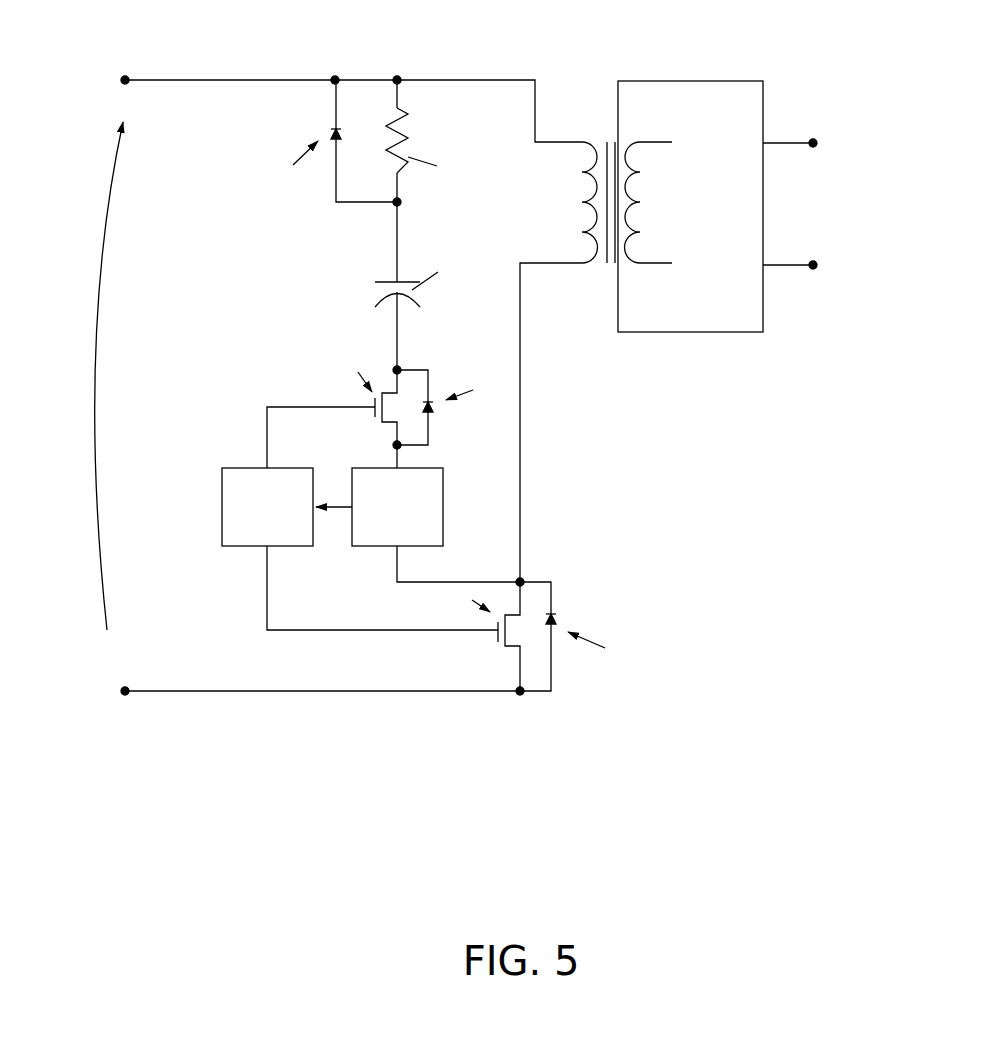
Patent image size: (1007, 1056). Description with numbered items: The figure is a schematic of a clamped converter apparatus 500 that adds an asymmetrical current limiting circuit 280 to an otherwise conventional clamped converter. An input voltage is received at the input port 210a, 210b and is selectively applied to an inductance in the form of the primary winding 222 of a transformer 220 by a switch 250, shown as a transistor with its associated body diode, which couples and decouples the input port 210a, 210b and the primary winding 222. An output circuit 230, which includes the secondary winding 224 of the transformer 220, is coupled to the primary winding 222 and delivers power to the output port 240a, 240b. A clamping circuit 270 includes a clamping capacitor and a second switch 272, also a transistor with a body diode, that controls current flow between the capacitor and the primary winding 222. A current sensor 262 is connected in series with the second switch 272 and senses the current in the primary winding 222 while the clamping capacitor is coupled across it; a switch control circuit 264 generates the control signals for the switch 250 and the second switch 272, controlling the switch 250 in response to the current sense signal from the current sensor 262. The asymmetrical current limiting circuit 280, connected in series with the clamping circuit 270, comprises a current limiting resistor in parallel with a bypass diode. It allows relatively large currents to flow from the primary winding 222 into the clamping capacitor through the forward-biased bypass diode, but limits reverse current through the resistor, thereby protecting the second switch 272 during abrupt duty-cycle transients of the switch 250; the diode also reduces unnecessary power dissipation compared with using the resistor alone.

The converter apparatus 500 is at (750, 662).
The input port 210a is at (124, 76).
The input port 210b is at (122, 694).
The transformer 220 is at (596, 150).
The primary winding 222 is at (583, 203).
The secondary winding 224 is at (640, 205).
The output circuit 230 is at (693, 80).
The output port 240a is at (818, 138).
The output port 240b is at (818, 260).
The switch 250 is at (583, 600).
The current sensor 262 is at (445, 510).
The switch control circuit 264 is at (222, 507).
The clamping circuit 270 is at (354, 346).
The second switch 272 is at (350, 356).
The asymmetrical current limiting circuit 280 is at (243, 156).